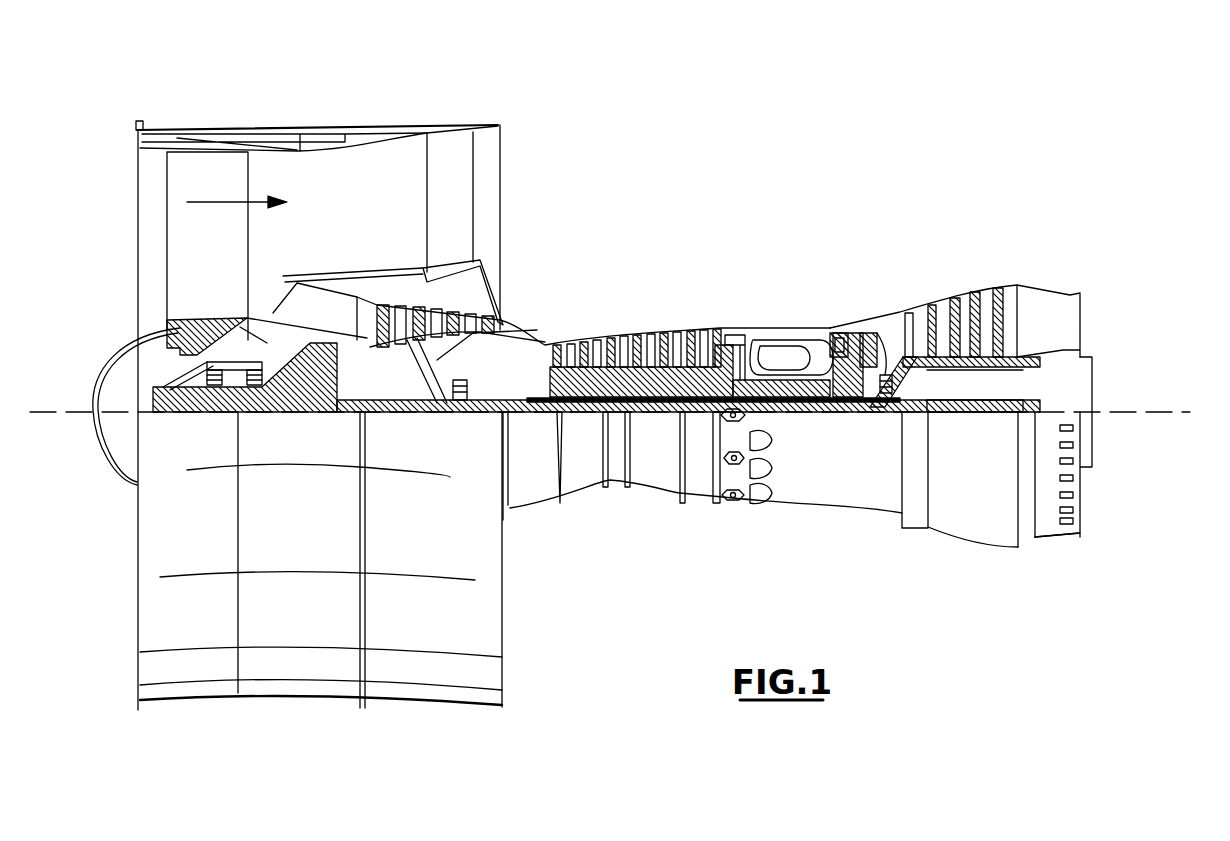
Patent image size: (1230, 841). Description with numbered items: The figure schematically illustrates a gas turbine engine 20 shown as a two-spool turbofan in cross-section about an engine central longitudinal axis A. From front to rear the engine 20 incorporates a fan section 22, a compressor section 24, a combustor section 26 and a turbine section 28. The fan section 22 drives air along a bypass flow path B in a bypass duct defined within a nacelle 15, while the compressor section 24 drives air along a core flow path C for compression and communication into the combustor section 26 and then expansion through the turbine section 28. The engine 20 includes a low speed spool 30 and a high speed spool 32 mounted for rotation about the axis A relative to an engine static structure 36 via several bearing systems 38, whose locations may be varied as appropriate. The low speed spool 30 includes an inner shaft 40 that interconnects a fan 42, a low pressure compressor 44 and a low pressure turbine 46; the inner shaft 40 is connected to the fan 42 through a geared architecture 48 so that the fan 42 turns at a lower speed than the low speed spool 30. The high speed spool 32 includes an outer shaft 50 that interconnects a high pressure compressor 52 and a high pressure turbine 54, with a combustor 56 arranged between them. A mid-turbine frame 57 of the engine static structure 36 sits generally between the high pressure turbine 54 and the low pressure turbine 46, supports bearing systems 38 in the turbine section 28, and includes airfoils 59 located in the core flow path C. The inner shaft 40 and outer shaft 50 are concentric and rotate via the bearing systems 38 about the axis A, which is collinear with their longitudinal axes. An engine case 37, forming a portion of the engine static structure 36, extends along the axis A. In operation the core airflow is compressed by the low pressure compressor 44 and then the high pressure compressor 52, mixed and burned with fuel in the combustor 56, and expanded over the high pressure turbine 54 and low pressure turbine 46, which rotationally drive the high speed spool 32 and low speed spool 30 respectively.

The gas turbine engine 20 is at (782, 176).
The fan section 22 is at (250, 117).
The nacelle 15 is at (320, 132).
The compressor section 24 is at (552, 312).
The combustor section 26 is at (774, 295).
The turbine section 28 is at (925, 262).
The low speed spool 30 is at (657, 428).
The high speed spool 32 is at (703, 360).
The engine static structure 36 is at (698, 508).
The engine case 37 is at (865, 518).
The bearing systems 38 is at (460, 397).
The inner shaft 40 is at (522, 413).
The fan 42 is at (190, 256).
The low pressure compressor 44 is at (423, 322).
The low pressure turbine 46 is at (965, 297).
The geared architecture 48 is at (327, 397).
The outer shaft 50 is at (780, 403).
The high pressure compressor 52 is at (628, 347).
The high pressure turbine 54 is at (843, 333).
The combustor 56 is at (773, 350).
The mid-turbine frame 57 is at (890, 312).
The airfoils 59 is at (917, 380).
The engine central longitudinal axis A is at (1178, 410).
The bypass flow path B is at (223, 202).
The core flow path C is at (315, 307).